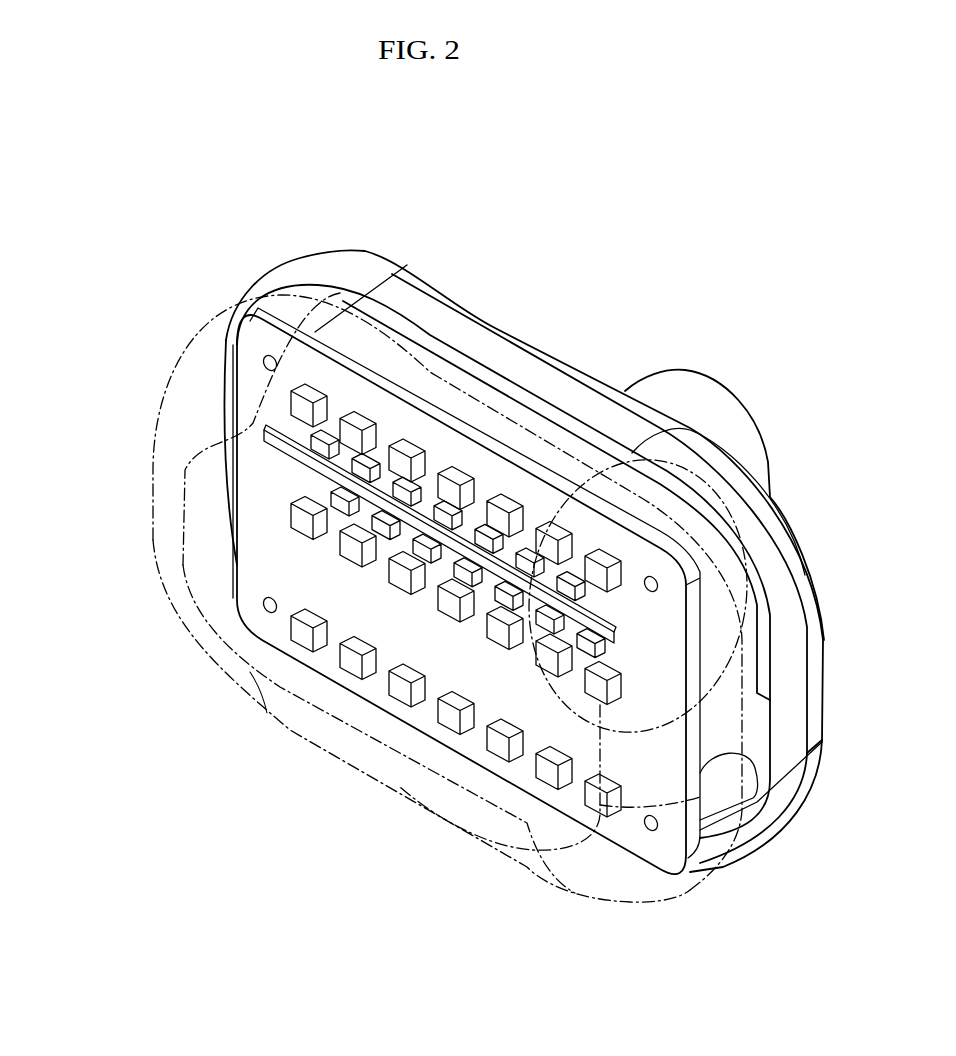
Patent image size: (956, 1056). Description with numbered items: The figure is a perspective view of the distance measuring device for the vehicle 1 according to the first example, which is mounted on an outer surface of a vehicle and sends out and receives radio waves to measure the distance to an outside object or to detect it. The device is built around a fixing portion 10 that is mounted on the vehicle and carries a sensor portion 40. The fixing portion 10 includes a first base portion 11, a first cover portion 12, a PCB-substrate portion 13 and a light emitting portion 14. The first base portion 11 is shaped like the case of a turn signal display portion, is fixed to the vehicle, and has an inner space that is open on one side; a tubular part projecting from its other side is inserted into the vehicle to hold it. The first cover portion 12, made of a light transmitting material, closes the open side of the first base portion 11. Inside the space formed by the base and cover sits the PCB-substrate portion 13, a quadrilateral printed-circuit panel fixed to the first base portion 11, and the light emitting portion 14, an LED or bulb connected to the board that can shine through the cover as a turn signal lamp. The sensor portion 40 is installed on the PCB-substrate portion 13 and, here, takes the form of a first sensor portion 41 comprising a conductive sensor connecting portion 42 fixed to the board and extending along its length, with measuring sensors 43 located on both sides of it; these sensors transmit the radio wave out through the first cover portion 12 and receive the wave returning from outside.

The distance measuring device for the vehicle 1 is at (240, 250).
The fixing portion 10 is at (539, 336).
The first base portion 11 is at (458, 323).
The first cover portion 12 is at (398, 793).
The PCB-substrate portion 13 is at (282, 576).
The light emitting portion 14 is at (398, 688).
The sensor portion 40 is at (266, 434).
The first sensor portion 41 is at (95, 440).
The sensor connecting portion 42 is at (268, 442).
The measuring sensors 43 is at (330, 488).